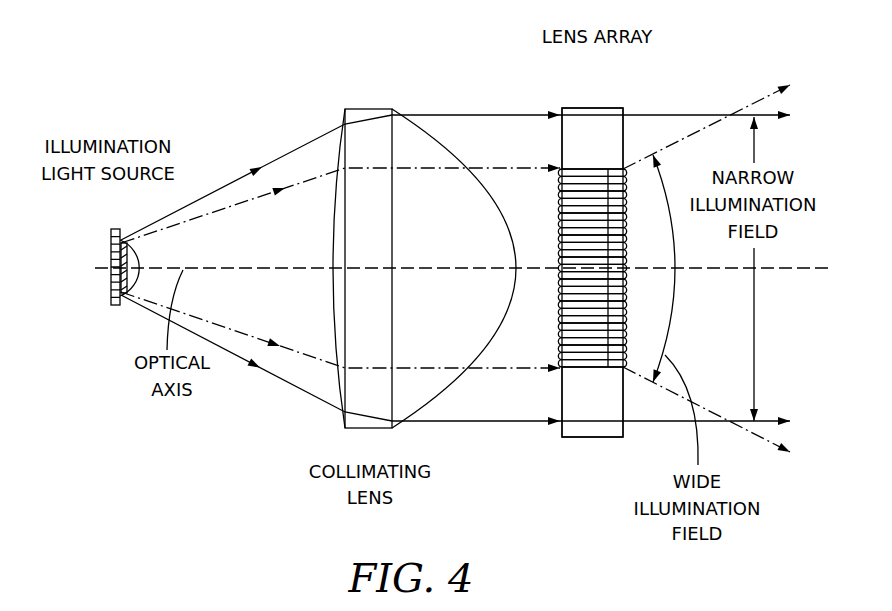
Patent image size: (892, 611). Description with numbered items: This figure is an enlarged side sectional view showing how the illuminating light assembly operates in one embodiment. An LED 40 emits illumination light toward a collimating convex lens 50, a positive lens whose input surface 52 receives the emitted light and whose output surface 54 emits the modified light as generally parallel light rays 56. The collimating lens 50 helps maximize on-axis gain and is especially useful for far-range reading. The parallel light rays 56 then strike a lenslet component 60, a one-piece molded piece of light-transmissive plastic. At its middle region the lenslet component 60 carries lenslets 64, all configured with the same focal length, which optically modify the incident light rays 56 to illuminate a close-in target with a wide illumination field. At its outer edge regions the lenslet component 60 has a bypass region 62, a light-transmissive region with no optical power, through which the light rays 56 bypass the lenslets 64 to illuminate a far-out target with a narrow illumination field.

The LED 40 is at (111, 255).
The collimating convex lens 50 is at (366, 417).
The input surface 52 is at (333, 238).
The output surface 54 is at (500, 208).
The light rays 56 is at (462, 114).
The lenslet component 60 is at (603, 108).
The bypass region 62 is at (613, 143).
The lenslets 64 is at (593, 363).